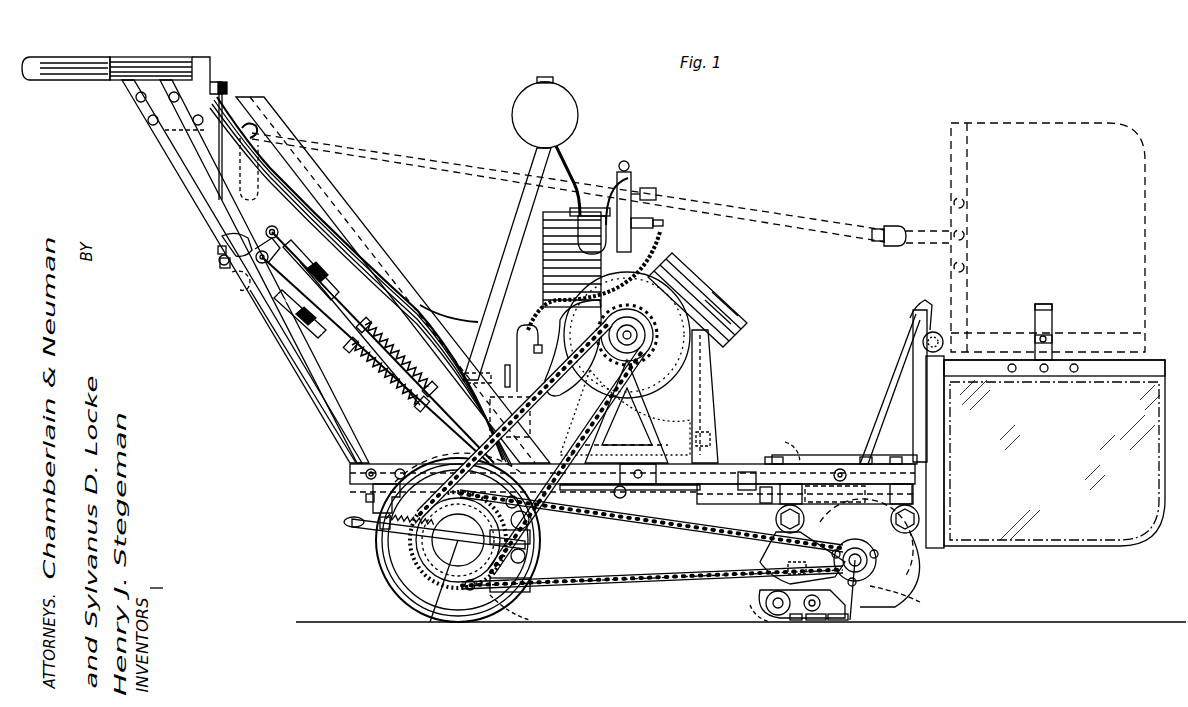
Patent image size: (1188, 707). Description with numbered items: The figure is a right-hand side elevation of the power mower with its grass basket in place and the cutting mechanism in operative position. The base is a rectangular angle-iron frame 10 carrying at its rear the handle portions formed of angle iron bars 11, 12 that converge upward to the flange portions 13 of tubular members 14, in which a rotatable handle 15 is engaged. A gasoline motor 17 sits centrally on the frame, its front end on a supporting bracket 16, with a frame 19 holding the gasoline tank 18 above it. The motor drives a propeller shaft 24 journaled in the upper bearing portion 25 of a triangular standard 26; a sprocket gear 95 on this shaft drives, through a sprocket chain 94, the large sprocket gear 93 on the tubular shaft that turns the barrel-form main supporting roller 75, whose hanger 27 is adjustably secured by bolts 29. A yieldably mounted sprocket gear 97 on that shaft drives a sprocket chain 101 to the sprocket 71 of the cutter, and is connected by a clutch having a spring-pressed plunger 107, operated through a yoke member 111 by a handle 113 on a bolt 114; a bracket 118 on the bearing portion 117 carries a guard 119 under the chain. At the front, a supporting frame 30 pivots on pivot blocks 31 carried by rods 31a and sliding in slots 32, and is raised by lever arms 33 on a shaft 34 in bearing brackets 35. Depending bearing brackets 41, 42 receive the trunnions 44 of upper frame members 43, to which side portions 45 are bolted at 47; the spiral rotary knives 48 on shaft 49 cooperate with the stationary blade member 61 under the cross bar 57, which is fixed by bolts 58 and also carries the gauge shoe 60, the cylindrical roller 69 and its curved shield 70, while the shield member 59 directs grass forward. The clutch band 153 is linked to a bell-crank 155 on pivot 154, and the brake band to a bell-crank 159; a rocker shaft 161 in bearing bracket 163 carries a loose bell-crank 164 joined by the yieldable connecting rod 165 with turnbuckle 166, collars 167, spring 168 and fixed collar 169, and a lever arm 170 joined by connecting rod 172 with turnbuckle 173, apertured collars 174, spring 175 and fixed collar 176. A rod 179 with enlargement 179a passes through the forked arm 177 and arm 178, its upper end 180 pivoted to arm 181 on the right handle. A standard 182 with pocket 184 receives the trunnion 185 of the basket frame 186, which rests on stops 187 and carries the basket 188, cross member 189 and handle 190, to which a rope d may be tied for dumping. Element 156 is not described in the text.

The frame 10 is at (714, 471).
The angle iron bar 11 is at (340, 431).
The angle iron bar 12 is at (425, 318).
The flange portion 13 is at (173, 133).
The tubular member 14 is at (152, 58).
The handle 15 is at (78, 56).
The supporting bracket 16 is at (700, 398).
The gasoline internal combustion motor 17 is at (596, 230).
The gasoline tank 18 is at (553, 118).
The frame 19 is at (522, 197).
The propeller shaft 24 is at (627, 330).
The upper bearing portion 25 is at (660, 345).
The triangular standard 26 is at (640, 402).
The bearing hanger 27 is at (391, 498).
The bolt 29 is at (452, 447).
The supporting frame 30 is at (694, 488).
The pivot block 31 is at (798, 439).
The rod 31a is at (842, 469).
The slot 32 is at (835, 495).
The lever arm 33 is at (640, 486).
The shaft 34 is at (556, 480).
The bearing bracket 35 is at (626, 497).
The depending bearing bracket 41 is at (920, 449).
The depending bearing bracket 42 is at (758, 499).
The upper frame member 43 is at (796, 480).
The trunnion 44 is at (748, 491).
The side portion 45 is at (790, 546).
The bolt 47 is at (776, 519).
The rotary knife 48 is at (900, 601).
The shaft 49 is at (862, 577).
The cross bar 57 is at (760, 619).
The bolt 58 is at (792, 621).
The shield member 59 is at (786, 563).
The gauge shoe 60 is at (812, 621).
The stationary blade member 61 is at (836, 621).
The cylindrical roller 69 is at (762, 606).
The curved shield 70 is at (800, 599).
The sprocket 71 is at (850, 592).
The main supporting roller 75 is at (392, 549).
The large sprocket gear 93 is at (424, 604).
The sprocket chain 94 is at (518, 325).
The sprocket gear 95 is at (662, 300).
The sprocket gear 97 is at (470, 590).
The sprocket chain 101 is at (622, 578).
The plunger 107 is at (458, 540).
The yoke member 111 is at (400, 534).
The handle 113 is at (378, 521).
The bolt 114 is at (380, 530).
The bearing portion 117 is at (532, 540).
The bracket 118 is at (526, 560).
The guard 119 is at (520, 595).
The clutch band 153 is at (418, 570).
The pivot 154 is at (648, 555).
The bell-crank 155 is at (530, 522).
The guard 156 is at (504, 614).
The bell-crank 159 is at (530, 508).
The rocker shaft 161 is at (268, 262).
The bearing bracket 163 is at (228, 238).
The bell-crank 164 is at (245, 285).
The yieldable connecting rod 165 is at (335, 325).
The turnbuckle 166 is at (318, 300).
The collar 167 is at (352, 372).
The spring 168 is at (400, 371).
The fixed collar 169 is at (355, 356).
The lever arm 170 is at (270, 226).
The connecting rod 172 is at (370, 266).
The turnbuckle 173 is at (347, 247).
The apertured collar 174 is at (403, 298).
The spring 175 is at (452, 309).
The fixed collar 176 is at (387, 284).
The forked arm 177 is at (218, 250).
The arm 178 is at (225, 268).
The rod 179 is at (260, 165).
The enlargement 179a is at (219, 260).
The upper end 180 is at (230, 88).
The arm 181 is at (212, 70).
The standard 182 is at (905, 381).
The pocket 184 is at (924, 312).
The trunnion 185 is at (922, 340).
The basket frame 186 is at (946, 463).
The stop 187 is at (900, 423).
The basket 188 is at (1054, 453).
The cross member 189 is at (1052, 342).
The handle 190 is at (1044, 305).
The rope d is at (742, 210).